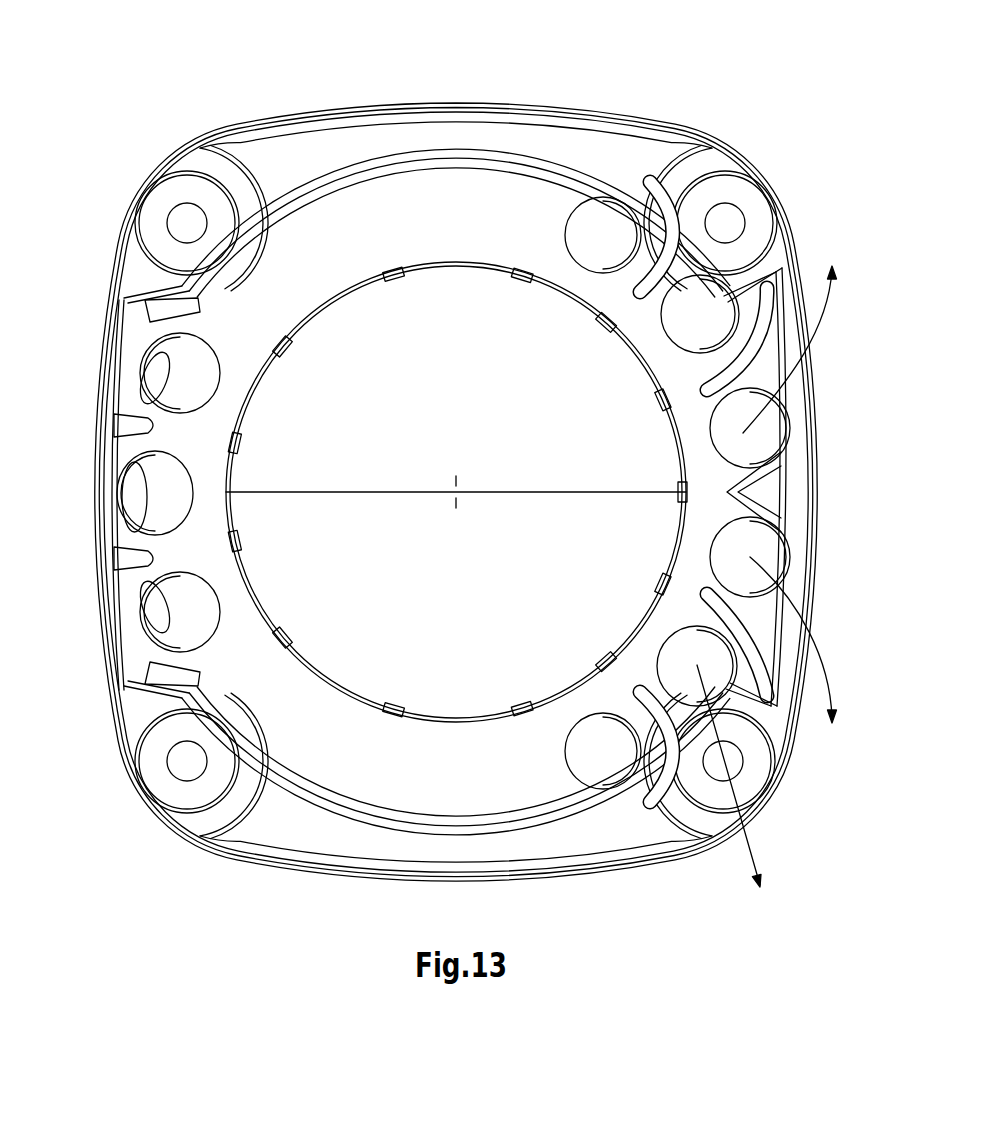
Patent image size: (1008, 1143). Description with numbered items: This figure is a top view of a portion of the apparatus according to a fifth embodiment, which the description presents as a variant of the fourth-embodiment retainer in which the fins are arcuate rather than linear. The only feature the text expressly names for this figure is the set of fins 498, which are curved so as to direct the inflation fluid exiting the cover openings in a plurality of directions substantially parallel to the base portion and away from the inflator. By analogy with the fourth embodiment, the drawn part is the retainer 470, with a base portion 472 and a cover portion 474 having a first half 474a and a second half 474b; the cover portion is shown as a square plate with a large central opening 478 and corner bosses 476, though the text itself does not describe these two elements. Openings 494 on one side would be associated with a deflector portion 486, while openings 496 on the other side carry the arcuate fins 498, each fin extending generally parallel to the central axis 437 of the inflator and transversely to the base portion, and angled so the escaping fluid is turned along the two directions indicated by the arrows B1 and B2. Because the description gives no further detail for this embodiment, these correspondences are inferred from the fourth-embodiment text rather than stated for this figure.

The cover plate assembly 470 is at (704, 107).
The peripheral pocket 472 is at (617, 162).
The annular ring 474 is at (488, 158).
The upper annular face 474a is at (335, 217).
The lower annular face 474b is at (606, 683).
The mounting boss 476 is at (182, 215).
The central opening 478 is at (363, 645).
The side wall 486 is at (113, 527).
The left receptacles 494 is at (160, 490).
The right receptacles 496 is at (606, 232).
The fins 498 is at (787, 473).
The central axis 437 is at (454, 490).
The direction B1 is at (700, 665).
The direction B2 is at (823, 332).